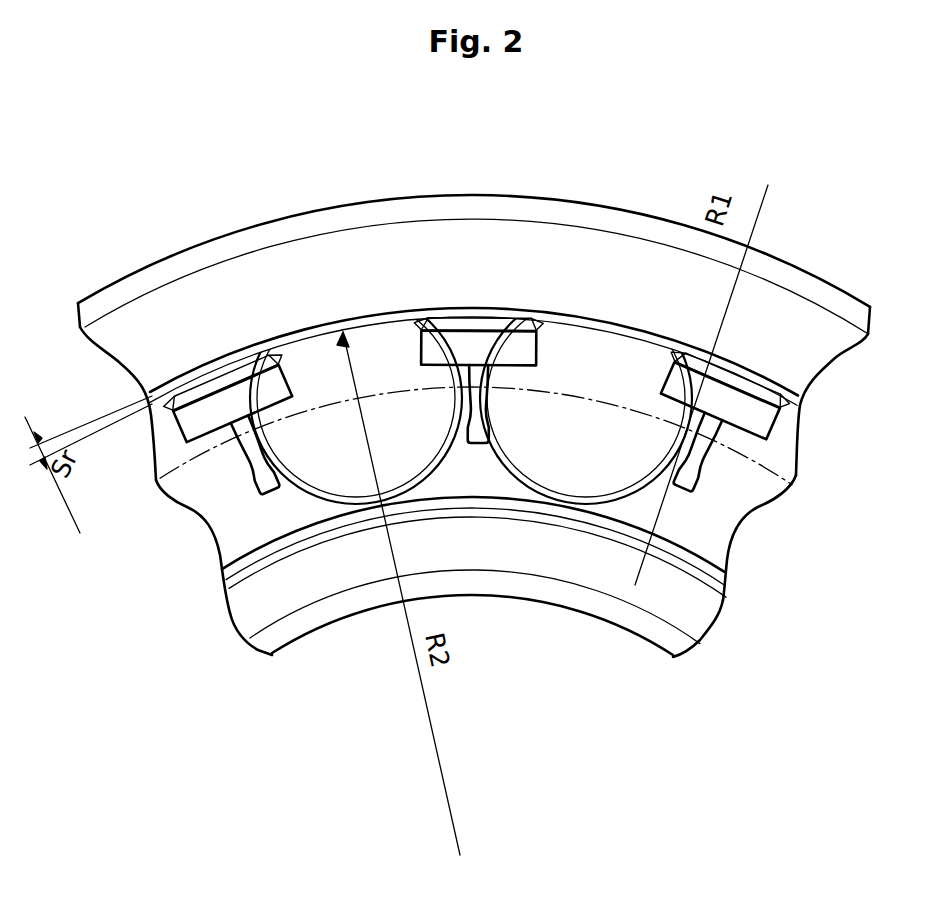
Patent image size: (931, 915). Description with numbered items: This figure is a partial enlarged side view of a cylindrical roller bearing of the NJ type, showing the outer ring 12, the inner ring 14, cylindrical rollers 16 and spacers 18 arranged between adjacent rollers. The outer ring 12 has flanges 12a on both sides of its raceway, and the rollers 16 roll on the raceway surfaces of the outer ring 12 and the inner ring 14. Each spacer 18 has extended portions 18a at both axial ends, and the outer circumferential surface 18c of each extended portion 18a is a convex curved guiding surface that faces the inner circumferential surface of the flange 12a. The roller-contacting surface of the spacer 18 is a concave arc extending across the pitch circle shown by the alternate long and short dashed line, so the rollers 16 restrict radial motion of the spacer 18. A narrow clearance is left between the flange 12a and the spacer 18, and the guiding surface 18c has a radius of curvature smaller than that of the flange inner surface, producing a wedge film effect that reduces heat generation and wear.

The outer ring 12 is at (446, 322).
The flange 12a is at (134, 356).
The inner ring 14 is at (692, 617).
The cylindrical roller 16 is at (734, 498).
The spacer 18 is at (460, 346).
The extended portion 18a is at (762, 433).
The outer circumferential surface (guiding surface) 18c is at (230, 370).